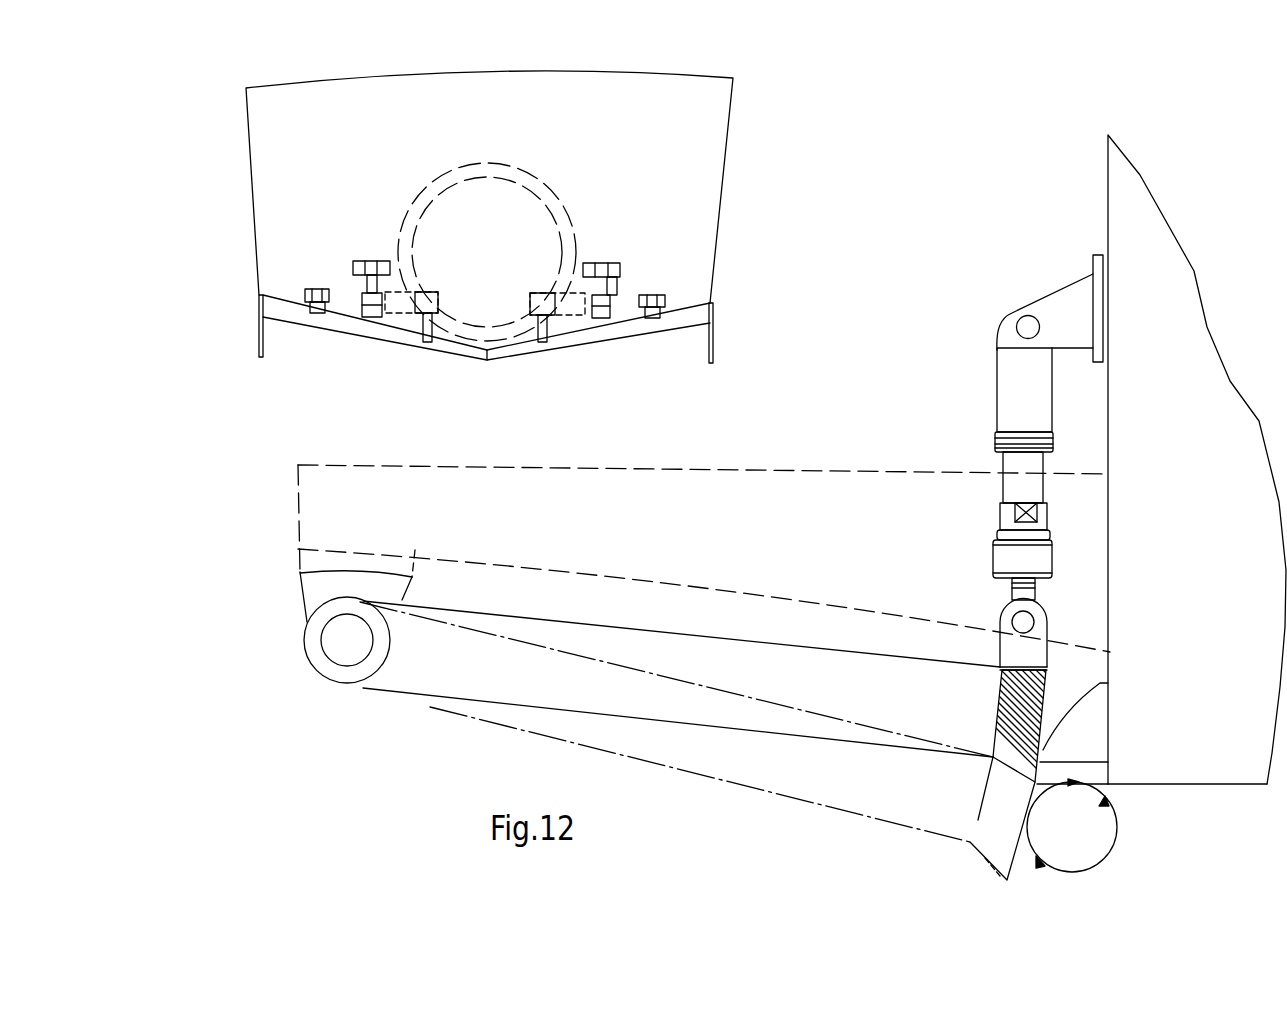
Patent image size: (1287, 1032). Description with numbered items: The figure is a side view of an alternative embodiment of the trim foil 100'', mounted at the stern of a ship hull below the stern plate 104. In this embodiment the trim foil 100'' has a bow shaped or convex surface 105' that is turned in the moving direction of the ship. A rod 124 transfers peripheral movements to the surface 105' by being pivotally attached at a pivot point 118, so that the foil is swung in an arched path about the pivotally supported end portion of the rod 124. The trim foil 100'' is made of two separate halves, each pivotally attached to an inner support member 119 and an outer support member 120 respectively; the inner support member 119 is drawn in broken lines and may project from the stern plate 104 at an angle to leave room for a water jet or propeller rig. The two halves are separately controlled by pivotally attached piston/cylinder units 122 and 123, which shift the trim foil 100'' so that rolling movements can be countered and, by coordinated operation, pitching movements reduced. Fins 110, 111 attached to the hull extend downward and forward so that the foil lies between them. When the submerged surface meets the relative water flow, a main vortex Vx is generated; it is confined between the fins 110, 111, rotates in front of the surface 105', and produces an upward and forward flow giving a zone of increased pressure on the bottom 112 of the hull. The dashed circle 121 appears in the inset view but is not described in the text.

The stern plate 104 is at (1110, 450).
The bottom of the ship hull 112 is at (1170, 785).
The piston/cylinder unit 123 is at (1022, 472).
The rod 124 is at (660, 648).
The pivot point 118 is at (343, 640).
The inner support member 119 is at (330, 497).
The trim foil 100'' is at (740, 543).
The convex surface 105' is at (1065, 805).
The roll circle 121 is at (523, 172).
The piston/cylinder unit 122 is at (370, 293).
The outer support member 120 is at (317, 290).
The fin 110 is at (259, 345).
The fin 111 is at (713, 352).
The main vortex Vx is at (1083, 842).